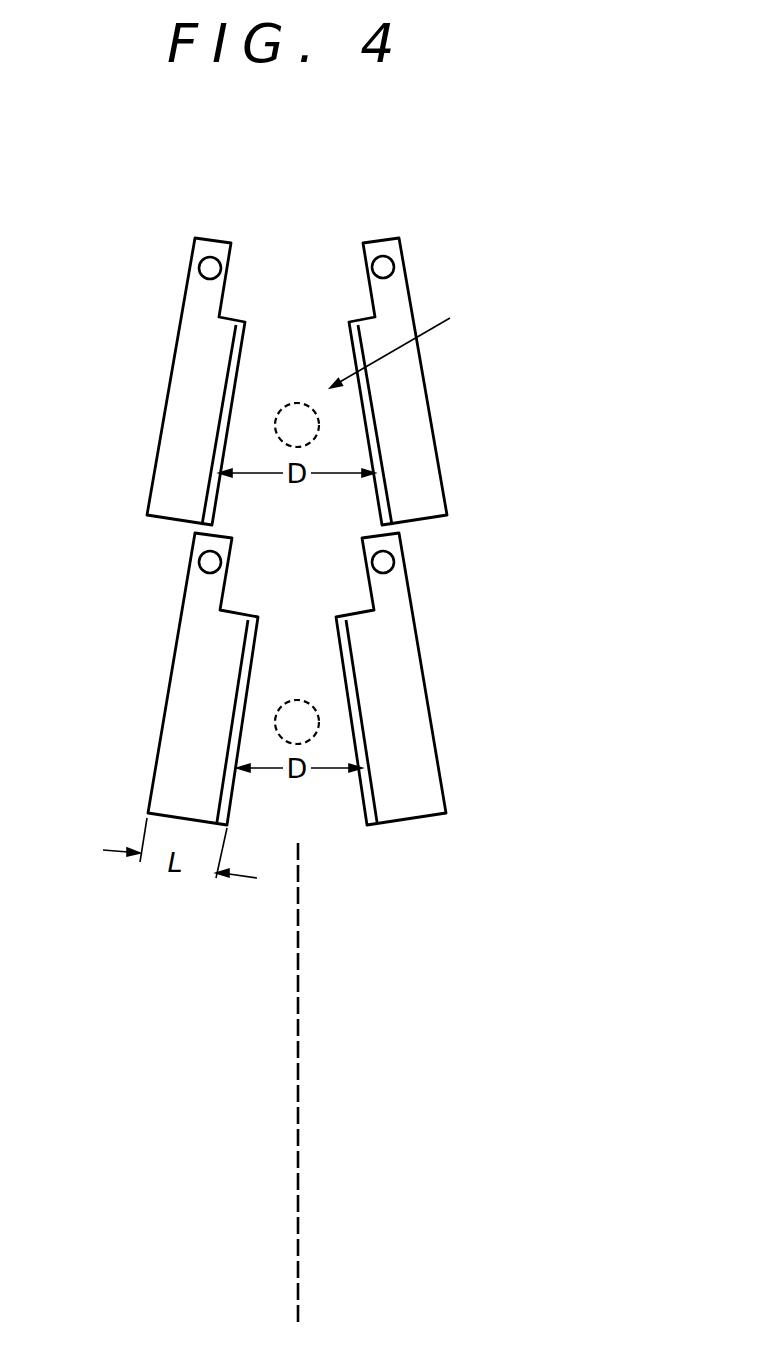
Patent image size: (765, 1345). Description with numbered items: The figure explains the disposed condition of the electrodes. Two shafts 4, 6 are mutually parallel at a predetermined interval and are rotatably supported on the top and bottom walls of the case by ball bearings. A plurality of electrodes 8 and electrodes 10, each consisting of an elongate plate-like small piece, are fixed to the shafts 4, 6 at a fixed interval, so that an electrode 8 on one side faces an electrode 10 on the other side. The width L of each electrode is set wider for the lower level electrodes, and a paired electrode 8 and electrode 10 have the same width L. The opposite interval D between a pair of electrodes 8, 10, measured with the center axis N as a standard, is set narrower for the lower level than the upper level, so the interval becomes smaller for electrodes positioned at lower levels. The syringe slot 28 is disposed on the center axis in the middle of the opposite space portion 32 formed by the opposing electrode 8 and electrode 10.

The shaft 4 is at (210, 262).
The shaft 6 is at (384, 262).
The electrode 8 is at (172, 437).
The electrode 10 is at (422, 432).
The syringe slot 28 is at (295, 403).
The opposite space portion 32 is at (450, 318).